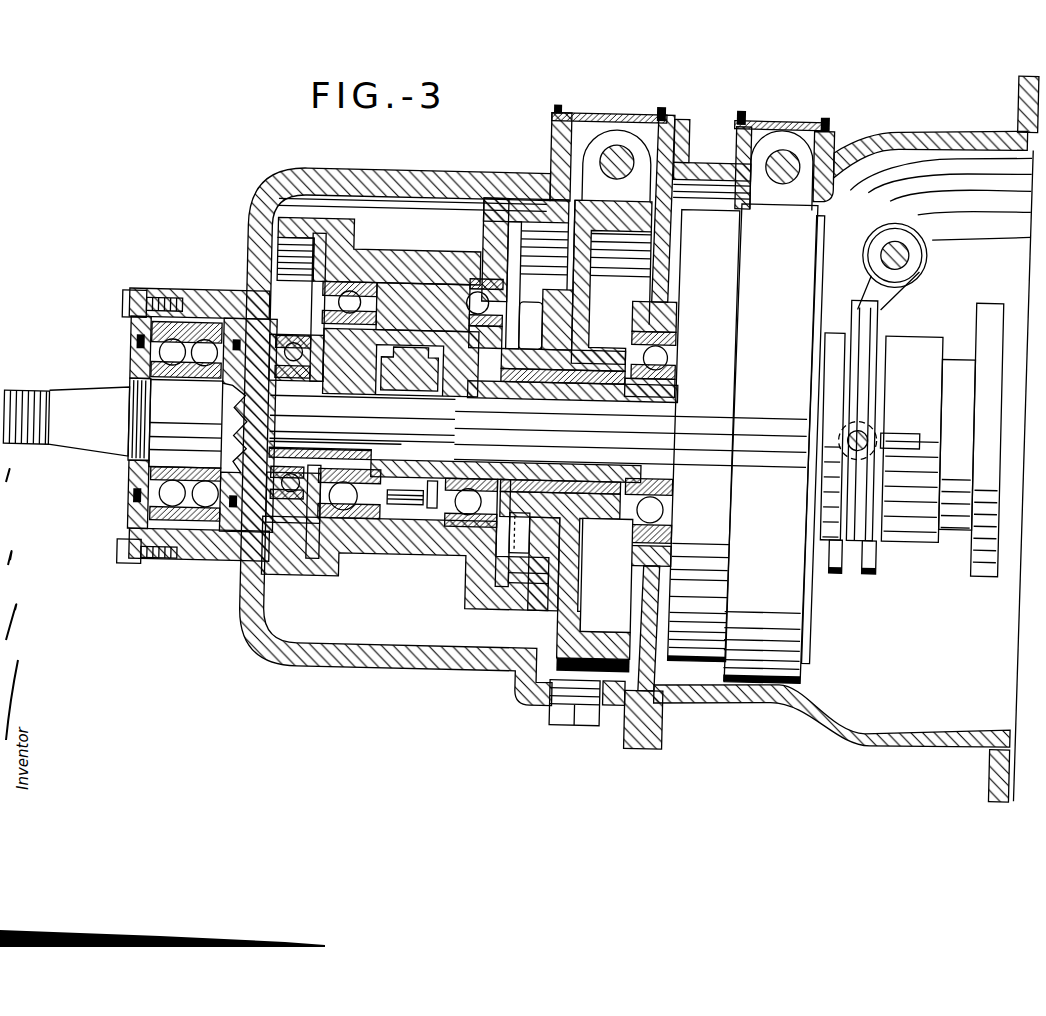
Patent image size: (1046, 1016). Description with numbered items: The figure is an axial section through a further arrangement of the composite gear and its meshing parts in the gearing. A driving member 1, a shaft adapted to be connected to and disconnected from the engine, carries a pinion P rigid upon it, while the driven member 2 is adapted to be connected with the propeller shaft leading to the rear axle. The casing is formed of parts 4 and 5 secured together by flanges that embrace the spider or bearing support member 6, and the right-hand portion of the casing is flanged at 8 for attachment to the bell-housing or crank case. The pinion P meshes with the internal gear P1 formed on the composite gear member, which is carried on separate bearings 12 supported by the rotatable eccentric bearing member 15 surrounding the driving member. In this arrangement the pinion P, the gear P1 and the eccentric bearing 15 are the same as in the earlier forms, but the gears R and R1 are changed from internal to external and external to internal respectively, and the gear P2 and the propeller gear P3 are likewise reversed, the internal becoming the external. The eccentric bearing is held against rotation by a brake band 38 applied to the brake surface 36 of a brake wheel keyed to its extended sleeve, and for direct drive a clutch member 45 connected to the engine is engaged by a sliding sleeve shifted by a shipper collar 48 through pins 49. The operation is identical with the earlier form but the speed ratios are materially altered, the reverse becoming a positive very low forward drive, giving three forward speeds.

The driving member 1 is at (538, 431).
The driven member 2 is at (66, 420).
The casing part 4 is at (757, 699).
The casing part 5 is at (378, 662).
The spider or bearing support member 6 is at (666, 295).
The flange 8 is at (995, 757).
The bearings 12 is at (408, 497).
The eccentric bearing member 15 is at (478, 386).
The brake surface 36 is at (704, 435).
The brake band 38 is at (774, 444).
The clutch member 45 is at (912, 439).
The shipper collar 48 is at (888, 311).
The pins 49 is at (869, 428).
The pinion P is at (430, 386).
The internal gear P1 is at (410, 310).
The gear of composite gear member P2 is at (280, 247).
The propeller gear P3 is at (280, 288).
The gear on wheel-like body R is at (517, 578).
The gear R1 is at (533, 228).